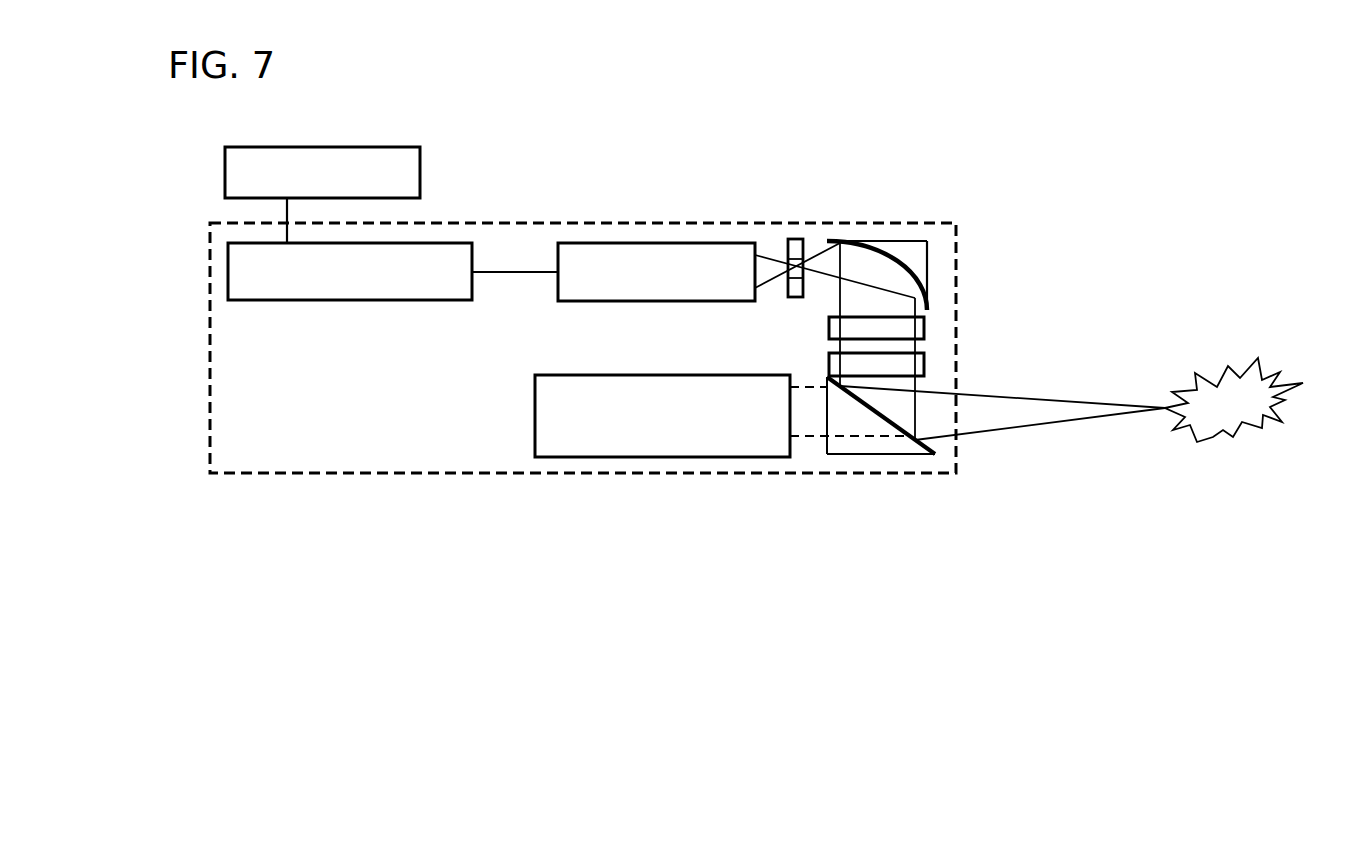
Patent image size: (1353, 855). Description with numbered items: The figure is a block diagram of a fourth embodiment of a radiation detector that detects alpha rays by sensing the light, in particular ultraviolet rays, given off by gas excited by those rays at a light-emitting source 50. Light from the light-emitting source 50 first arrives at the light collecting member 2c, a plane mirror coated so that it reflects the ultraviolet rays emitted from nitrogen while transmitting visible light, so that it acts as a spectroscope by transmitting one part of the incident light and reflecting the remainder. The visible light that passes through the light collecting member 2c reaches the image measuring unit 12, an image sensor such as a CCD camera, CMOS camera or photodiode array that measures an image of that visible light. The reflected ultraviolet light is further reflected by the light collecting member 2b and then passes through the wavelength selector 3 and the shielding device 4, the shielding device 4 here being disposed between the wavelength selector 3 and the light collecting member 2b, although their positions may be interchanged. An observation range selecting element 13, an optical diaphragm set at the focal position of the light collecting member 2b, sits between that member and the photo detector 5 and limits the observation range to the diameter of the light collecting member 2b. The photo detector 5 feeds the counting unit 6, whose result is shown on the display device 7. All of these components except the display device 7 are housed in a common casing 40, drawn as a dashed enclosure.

The display device 7 is at (420, 164).
The counting unit 6 is at (228, 268).
The photo detector 5 is at (643, 243).
The observation range selecting element 13 is at (797, 239).
The light collecting member 2b is at (885, 240).
The shielding device 4 is at (924, 325).
The wavelength selector 3 is at (924, 362).
The light collecting member 2c is at (870, 454).
The image measuring unit 12 is at (693, 457).
The casing 40 is at (500, 473).
The light-emitting source 50 is at (1167, 392).